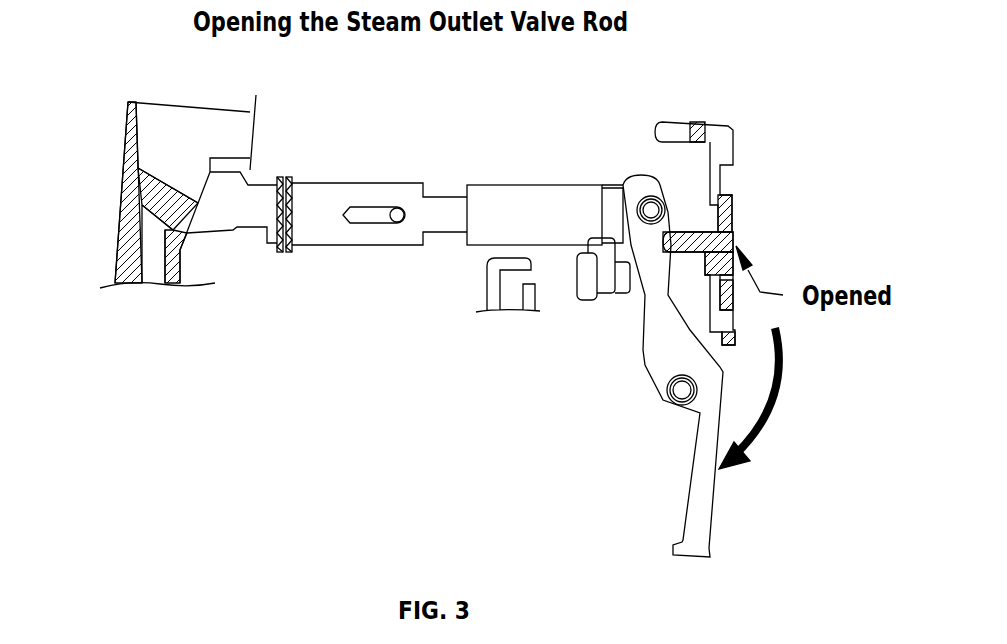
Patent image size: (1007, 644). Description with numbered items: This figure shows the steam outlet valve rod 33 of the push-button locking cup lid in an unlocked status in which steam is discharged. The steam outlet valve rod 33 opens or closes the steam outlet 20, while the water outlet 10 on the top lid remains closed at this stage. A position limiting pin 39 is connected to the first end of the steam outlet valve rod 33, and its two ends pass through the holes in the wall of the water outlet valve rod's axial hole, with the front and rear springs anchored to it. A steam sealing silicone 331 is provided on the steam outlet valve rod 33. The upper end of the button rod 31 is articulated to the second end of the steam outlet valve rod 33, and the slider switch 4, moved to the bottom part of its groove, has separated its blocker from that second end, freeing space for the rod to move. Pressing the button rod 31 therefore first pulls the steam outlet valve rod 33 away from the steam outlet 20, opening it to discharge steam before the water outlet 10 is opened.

The water outlet 10 is at (170, 190).
The position limiting pin 39 is at (408, 175).
The steam outlet valve rod 33 is at (530, 153).
The slider switch 4 is at (750, 218).
The steam outlet 20 is at (502, 306).
The steam sealing silicone 331 is at (580, 329).
The button rod 31 is at (740, 500).